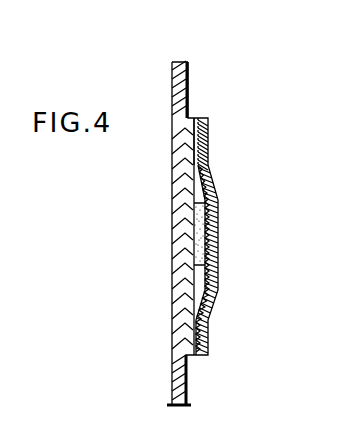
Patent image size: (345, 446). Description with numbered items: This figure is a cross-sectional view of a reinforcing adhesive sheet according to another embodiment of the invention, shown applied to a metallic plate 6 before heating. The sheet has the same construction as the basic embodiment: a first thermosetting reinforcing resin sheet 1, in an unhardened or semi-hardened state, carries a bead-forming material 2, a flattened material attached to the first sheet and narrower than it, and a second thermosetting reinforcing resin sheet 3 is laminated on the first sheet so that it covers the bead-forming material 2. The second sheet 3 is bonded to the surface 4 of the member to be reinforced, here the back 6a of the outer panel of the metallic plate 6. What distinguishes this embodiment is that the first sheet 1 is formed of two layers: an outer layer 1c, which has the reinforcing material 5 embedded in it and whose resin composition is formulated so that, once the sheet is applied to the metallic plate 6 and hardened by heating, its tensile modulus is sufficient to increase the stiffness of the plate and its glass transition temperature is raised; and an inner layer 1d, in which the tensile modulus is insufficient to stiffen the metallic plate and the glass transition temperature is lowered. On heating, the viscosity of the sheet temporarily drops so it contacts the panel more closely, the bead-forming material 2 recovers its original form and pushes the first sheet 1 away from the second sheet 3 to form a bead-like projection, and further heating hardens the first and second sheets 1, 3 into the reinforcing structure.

The first thermosetting reinforcing resin sheet 1 is at (245, 121).
The outer layer 1c is at (227, 139).
The inner layer 1d is at (196, 118).
The bead-forming material 2 is at (194, 238).
The second thermosetting reinforcing resin sheet 3 is at (182, 167).
The surface of member to be reinforced 4 is at (186, 327).
The reinforcing material 5 is at (217, 240).
The metallic plate 6 is at (187, 387).
The back of the outer panel 6a is at (190, 83).